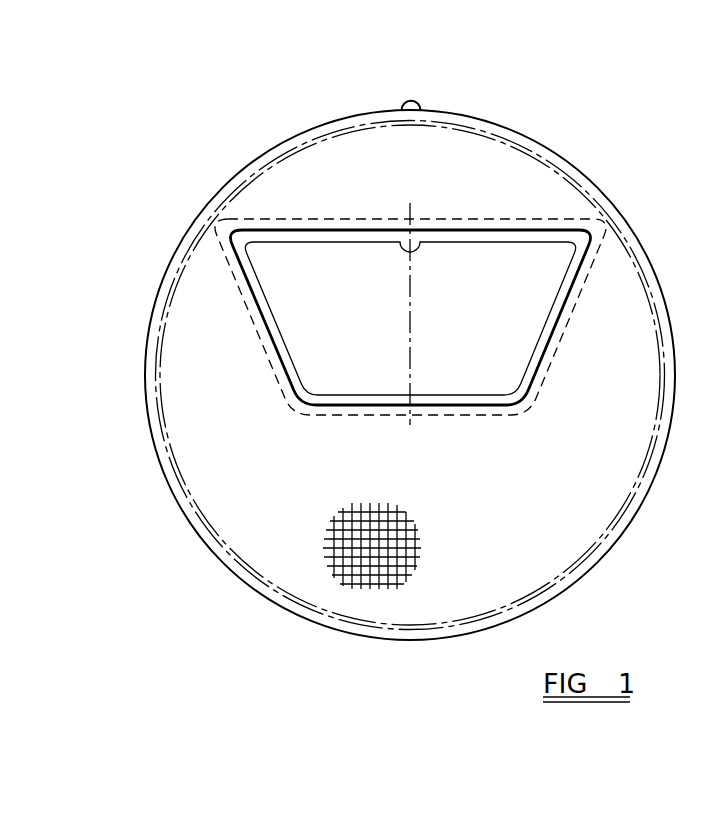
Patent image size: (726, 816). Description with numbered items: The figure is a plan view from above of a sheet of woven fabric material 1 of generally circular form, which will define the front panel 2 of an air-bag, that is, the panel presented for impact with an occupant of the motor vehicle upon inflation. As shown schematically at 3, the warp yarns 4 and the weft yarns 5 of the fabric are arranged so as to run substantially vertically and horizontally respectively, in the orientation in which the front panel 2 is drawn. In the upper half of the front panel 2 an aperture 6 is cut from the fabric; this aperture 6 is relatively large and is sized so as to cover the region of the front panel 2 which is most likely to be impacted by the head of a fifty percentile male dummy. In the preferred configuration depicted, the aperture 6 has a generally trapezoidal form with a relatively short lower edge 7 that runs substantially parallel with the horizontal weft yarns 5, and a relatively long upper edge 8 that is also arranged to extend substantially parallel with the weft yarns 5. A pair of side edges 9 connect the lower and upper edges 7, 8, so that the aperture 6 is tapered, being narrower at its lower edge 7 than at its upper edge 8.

The sheet of woven fabric material 1 is at (196, 562).
The front panel 2 is at (478, 155).
The schematic illustration of yarn arrangement 3 is at (323, 604).
The warp yarns 4 is at (362, 500).
The weft yarns 5 is at (410, 585).
The aperture 6 is at (528, 235).
The lower edge 7 is at (320, 408).
The upper edge 8 is at (330, 228).
The side edges 9 is at (255, 313).